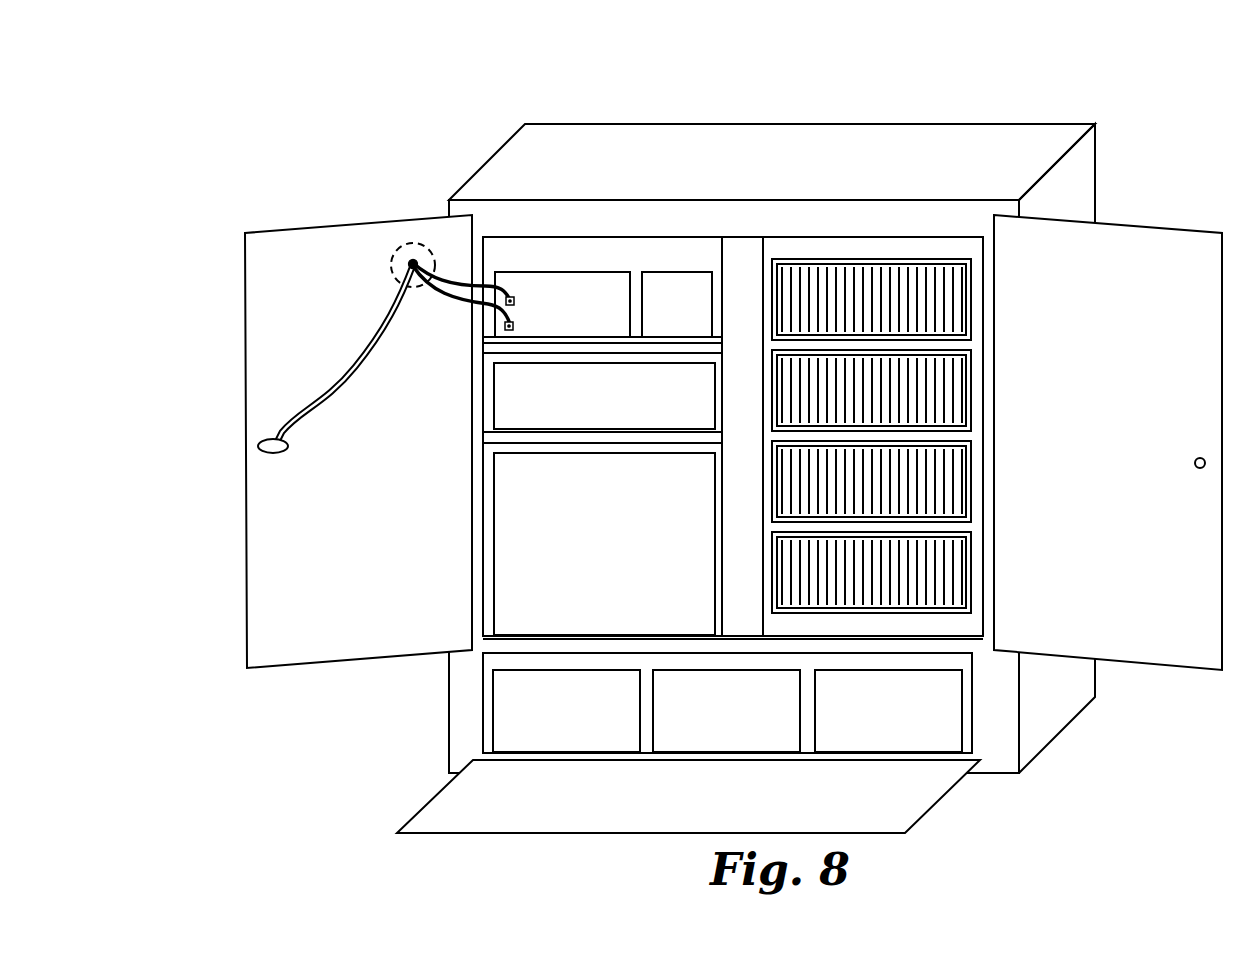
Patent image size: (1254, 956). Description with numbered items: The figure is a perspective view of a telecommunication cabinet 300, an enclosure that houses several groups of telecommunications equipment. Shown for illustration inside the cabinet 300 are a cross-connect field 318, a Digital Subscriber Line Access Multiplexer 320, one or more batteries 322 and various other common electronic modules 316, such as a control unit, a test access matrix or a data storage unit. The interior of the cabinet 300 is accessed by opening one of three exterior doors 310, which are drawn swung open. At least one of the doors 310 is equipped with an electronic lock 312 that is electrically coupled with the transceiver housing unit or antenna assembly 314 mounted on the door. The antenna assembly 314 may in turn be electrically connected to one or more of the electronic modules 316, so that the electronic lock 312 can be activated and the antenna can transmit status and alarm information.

The telecommunication cabinet 300 is at (1010, 91).
The exterior doors 310 is at (278, 242).
The electronic lock 312 is at (258, 446).
The transceiver housing unit or antenna assembly 314 is at (412, 242).
The electronic modules 316 is at (637, 397).
The cross-connect field 318 is at (842, 236).
The Digital Subscriber Line Access Multiplexer 320 is at (633, 553).
The batteries 322 is at (750, 731).